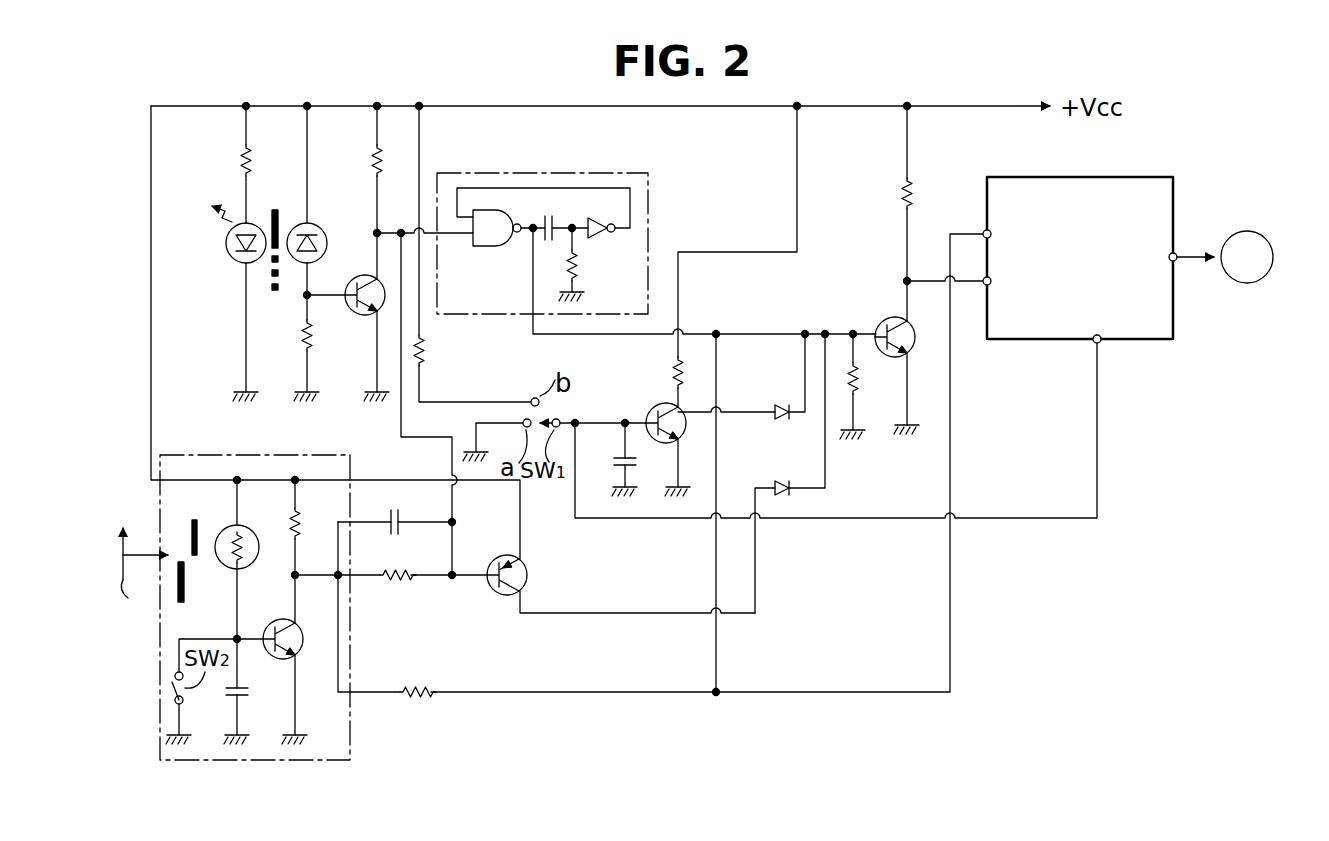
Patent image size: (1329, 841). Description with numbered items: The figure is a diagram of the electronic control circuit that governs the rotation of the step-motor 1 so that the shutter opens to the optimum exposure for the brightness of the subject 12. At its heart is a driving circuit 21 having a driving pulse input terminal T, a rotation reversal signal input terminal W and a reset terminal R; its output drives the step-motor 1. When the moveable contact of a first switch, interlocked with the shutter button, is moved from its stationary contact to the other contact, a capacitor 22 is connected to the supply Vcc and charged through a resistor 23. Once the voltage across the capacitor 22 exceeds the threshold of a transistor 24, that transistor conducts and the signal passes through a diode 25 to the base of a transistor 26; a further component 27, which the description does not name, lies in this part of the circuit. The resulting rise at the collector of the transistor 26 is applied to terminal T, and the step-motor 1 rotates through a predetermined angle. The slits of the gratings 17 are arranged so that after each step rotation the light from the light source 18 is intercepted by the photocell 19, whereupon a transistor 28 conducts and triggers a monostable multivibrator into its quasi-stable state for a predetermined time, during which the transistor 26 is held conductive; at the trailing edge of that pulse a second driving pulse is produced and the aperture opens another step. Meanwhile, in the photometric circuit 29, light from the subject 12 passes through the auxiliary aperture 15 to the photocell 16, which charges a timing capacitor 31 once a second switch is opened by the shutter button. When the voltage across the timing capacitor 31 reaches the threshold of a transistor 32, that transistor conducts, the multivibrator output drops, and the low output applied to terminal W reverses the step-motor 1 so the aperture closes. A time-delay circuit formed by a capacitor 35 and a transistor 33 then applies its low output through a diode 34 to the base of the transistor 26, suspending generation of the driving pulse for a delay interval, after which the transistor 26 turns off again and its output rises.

The step-motor 1 is at (1260, 231).
The subject 12 is at (144, 573).
The auxiliary aperture 15 is at (178, 558).
The photocell 16 is at (246, 530).
The gratings 17 is at (272, 300).
The light source 18 is at (229, 252).
The photocell 19 is at (311, 223).
The driving circuit 21 is at (1175, 199).
The capacitor 22 is at (620, 458).
The resistor 23 is at (425, 349).
The transistor 24 is at (650, 414).
The diode 25 is at (779, 404).
The transistor 26 is at (879, 322).
The resistor 27 is at (673, 372).
The transistor 28 is at (360, 314).
The photometric circuit 29 is at (352, 722).
The timing capacitor 31 is at (650, 184).
The transistor 32 is at (282, 620).
The transistor 33 is at (527, 563).
The diode 34 is at (773, 481).
The capacitor 35 is at (397, 507).